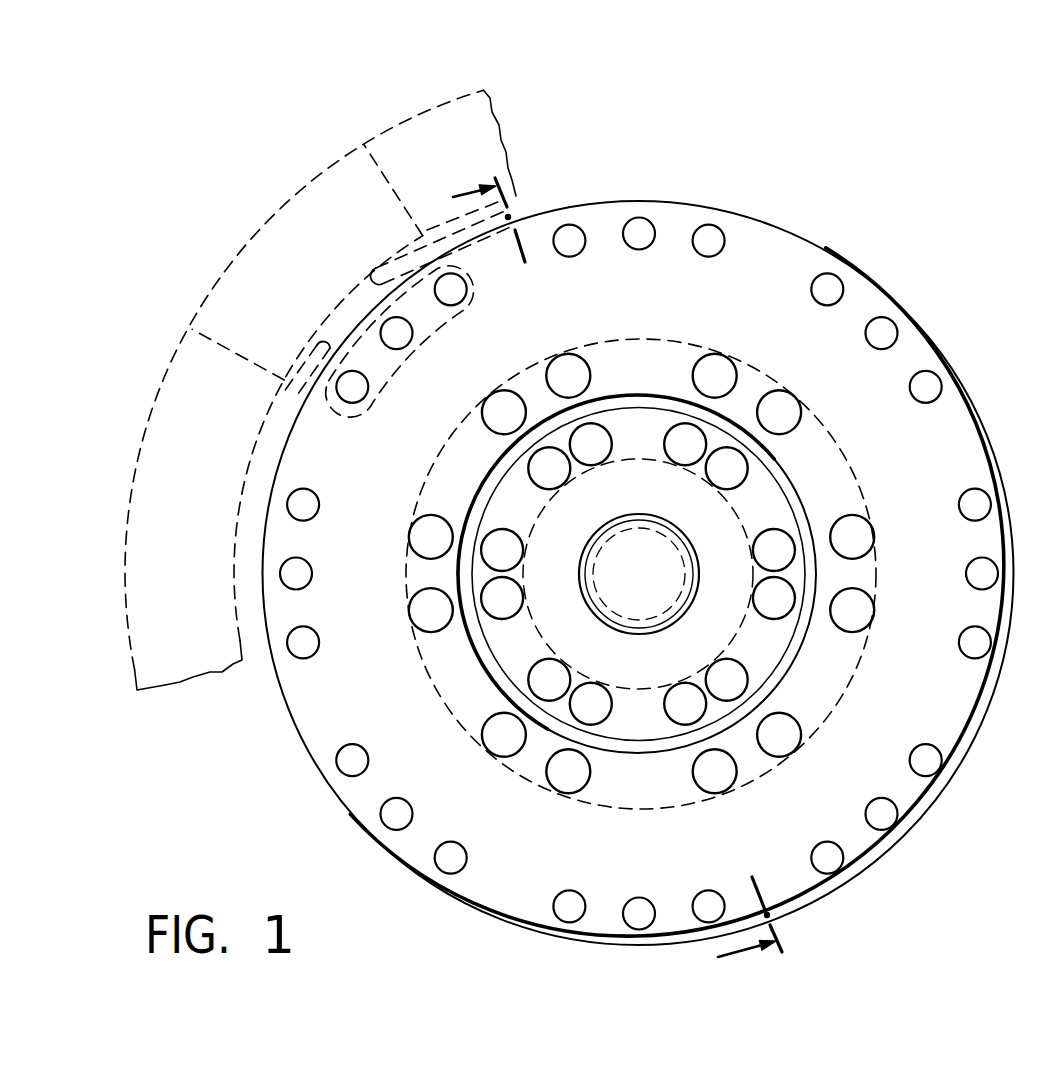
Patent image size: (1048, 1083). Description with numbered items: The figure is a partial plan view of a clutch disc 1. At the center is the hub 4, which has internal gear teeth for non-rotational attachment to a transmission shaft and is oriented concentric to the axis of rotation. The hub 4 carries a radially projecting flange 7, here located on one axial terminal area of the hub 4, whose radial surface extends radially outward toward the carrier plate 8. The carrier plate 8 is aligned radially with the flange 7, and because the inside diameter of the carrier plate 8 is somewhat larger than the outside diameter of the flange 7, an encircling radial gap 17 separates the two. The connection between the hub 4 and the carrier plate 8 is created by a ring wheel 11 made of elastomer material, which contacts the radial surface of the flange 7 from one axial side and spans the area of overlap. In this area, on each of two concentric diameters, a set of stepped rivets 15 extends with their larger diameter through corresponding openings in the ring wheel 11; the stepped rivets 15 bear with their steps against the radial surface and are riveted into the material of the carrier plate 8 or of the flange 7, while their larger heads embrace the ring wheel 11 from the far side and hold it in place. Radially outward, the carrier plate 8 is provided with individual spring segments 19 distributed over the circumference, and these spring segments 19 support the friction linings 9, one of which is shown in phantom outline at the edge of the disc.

The clutch disc 1 is at (858, 206).
The hub 4 is at (713, 547).
The flange 7 is at (780, 497).
The carrier plate 8 is at (895, 377).
The friction linings 9 is at (178, 640).
The ring wheel 11 is at (741, 358).
The stepped rivets 15 is at (848, 530).
The radial gap 17 is at (778, 680).
The spring segments 19 is at (312, 190).